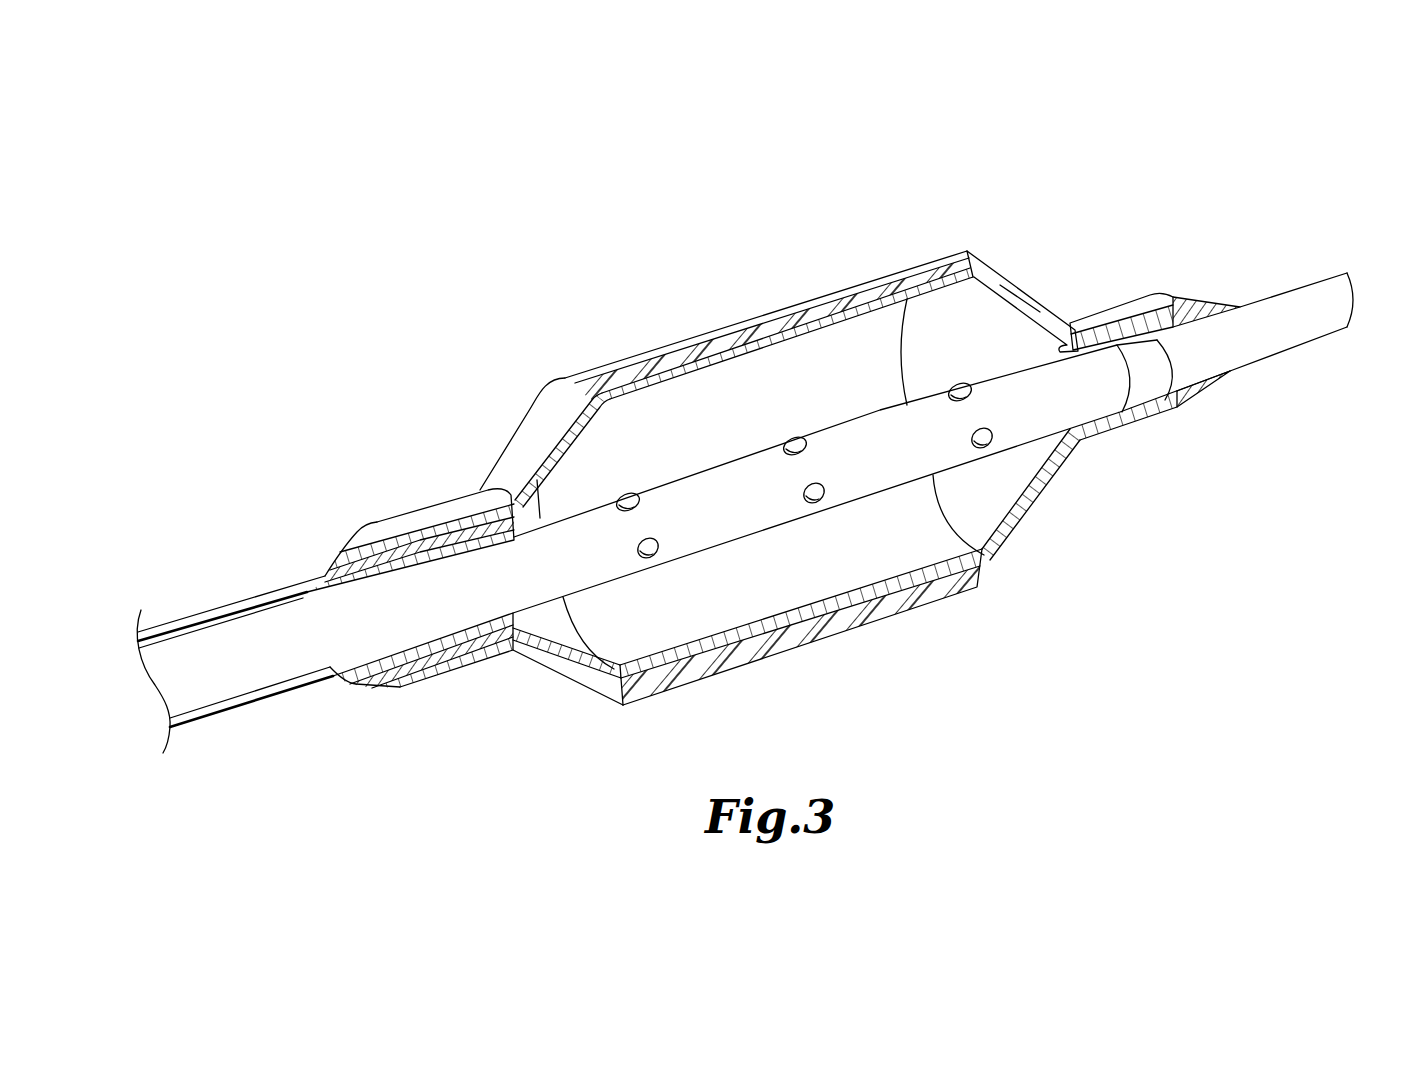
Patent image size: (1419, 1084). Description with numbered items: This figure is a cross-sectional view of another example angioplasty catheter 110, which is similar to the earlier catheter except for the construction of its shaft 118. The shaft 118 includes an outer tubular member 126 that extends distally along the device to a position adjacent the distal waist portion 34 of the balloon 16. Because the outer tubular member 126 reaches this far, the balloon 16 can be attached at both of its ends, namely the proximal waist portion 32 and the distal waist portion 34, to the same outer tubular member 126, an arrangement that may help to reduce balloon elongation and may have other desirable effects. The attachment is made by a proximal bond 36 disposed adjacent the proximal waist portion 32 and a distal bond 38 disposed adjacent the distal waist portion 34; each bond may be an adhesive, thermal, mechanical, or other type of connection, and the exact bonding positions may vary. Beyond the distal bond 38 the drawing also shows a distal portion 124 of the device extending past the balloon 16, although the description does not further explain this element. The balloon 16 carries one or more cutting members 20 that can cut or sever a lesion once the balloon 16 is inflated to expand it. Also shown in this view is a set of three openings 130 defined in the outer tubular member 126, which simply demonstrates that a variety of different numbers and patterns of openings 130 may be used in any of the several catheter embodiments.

The catheter 110 is at (282, 402).
The shaft 118 is at (212, 570).
The proximal bond 36 is at (340, 552).
The proximal waist portion 32 is at (452, 520).
The balloon 16 is at (548, 413).
The cutting members 20 is at (936, 268).
The outer tubular member 126 is at (712, 478).
The openings 130 is at (960, 388).
The distal waist portion 34 is at (1117, 325).
The distal bond 38 is at (1192, 312).
The distal tip shaft 124 is at (1313, 303).